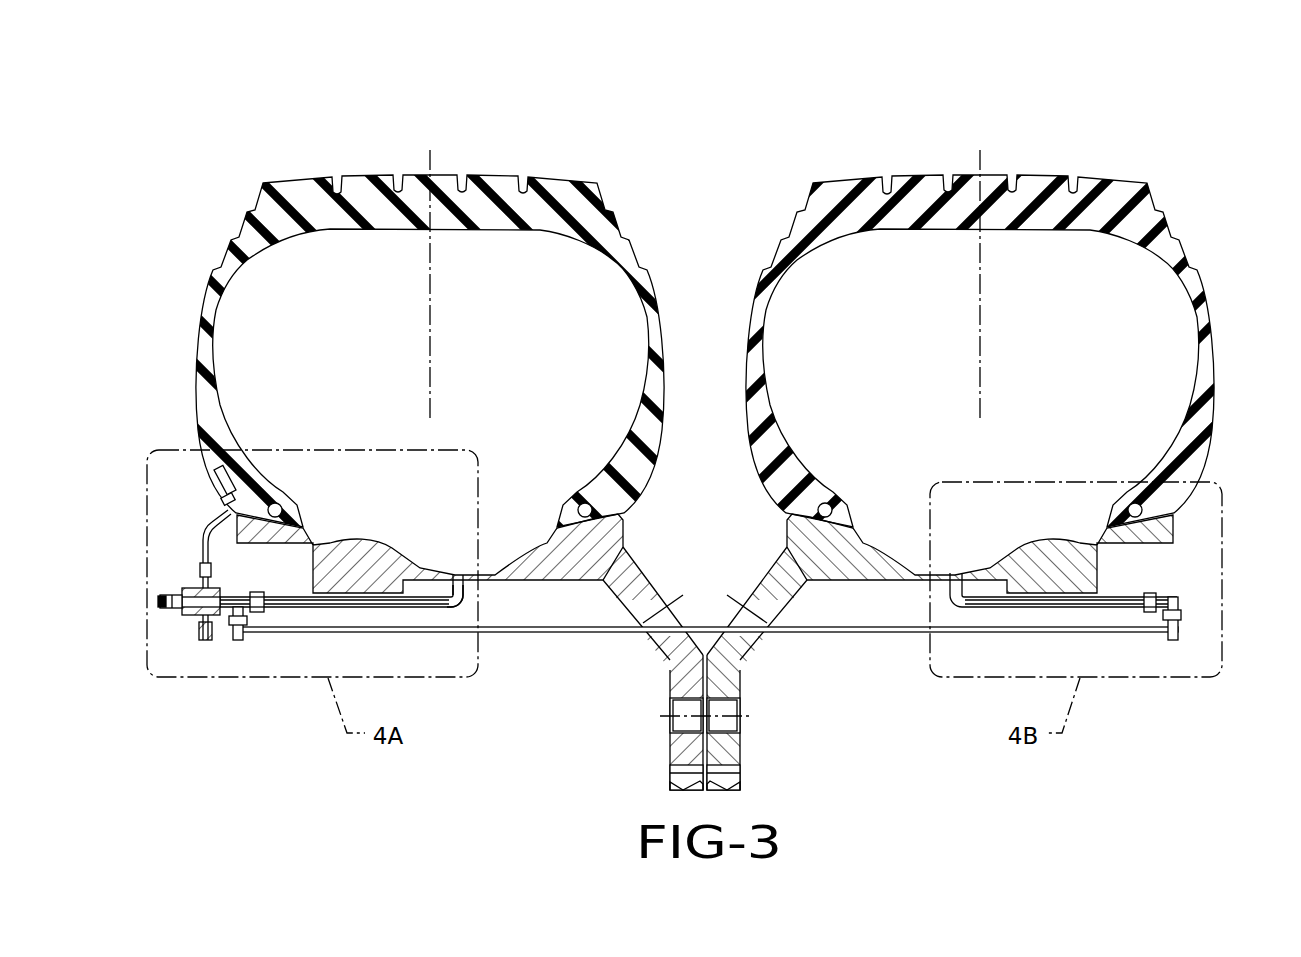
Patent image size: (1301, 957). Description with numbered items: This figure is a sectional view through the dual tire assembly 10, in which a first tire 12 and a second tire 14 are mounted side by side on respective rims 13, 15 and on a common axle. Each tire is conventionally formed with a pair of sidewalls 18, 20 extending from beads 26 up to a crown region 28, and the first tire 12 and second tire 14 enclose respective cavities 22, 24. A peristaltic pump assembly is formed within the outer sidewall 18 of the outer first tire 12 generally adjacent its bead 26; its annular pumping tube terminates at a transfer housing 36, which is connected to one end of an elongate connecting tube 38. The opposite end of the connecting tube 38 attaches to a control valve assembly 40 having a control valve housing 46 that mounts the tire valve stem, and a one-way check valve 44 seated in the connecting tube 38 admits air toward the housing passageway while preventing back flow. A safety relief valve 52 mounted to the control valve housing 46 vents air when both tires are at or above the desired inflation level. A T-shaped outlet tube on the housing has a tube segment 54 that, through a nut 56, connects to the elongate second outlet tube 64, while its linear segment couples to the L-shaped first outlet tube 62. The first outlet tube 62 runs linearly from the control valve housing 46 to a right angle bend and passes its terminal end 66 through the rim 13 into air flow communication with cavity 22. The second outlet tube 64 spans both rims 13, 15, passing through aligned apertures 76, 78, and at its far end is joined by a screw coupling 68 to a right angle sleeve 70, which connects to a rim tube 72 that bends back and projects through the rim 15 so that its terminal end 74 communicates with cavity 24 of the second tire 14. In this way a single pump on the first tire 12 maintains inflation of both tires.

The assembly 10 is at (697, 142).
The first tire 12 is at (351, 176).
The second tire 14 is at (1059, 176).
The rim 13 is at (523, 550).
The rim 15 is at (887, 553).
The sidewall 18 is at (203, 320).
The sidewall 20 is at (643, 287).
The cavity 22 is at (356, 346).
The cavity 24 is at (1026, 346).
The bead 26 is at (280, 504).
The crown region 28 is at (443, 172).
The transfer housing 36 is at (222, 492).
The connecting tube 38 is at (202, 528).
The control valve assembly 40 is at (181, 611).
The one-way check valve 44 is at (211, 583).
The control valve housing 46 is at (187, 597).
The safety relief valve 52 is at (201, 645).
The tube segment 54 is at (237, 643).
The nut 56 is at (231, 625).
The first outlet tube 62 is at (296, 592).
The second outlet tube 64 is at (833, 633).
The terminal end 66 is at (451, 573).
The screw coupling 68 is at (1180, 618).
The right angle sleeve 70 is at (1178, 599).
The rim tube 72 is at (1108, 596).
The terminal end 74 is at (960, 571).
The aperture 76 is at (633, 604).
The aperture 78 is at (777, 604).